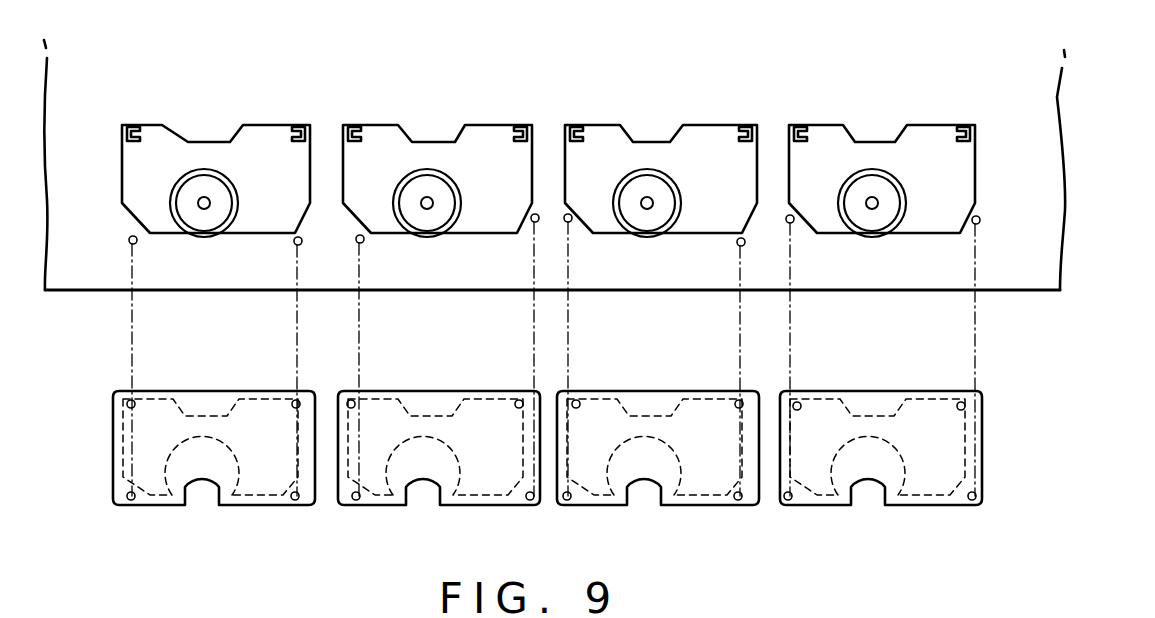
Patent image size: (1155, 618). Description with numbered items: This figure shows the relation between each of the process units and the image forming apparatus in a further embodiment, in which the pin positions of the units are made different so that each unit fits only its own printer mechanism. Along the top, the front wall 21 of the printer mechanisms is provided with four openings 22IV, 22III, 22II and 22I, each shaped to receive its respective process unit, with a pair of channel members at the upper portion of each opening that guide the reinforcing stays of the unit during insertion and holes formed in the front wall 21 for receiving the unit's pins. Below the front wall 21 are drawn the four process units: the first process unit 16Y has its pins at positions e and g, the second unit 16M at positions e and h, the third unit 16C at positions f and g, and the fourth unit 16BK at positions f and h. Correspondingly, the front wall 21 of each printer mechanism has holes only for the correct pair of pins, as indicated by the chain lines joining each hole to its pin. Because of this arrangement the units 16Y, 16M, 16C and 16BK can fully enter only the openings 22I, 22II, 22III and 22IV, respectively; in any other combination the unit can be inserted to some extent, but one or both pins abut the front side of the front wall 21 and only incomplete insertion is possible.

The front wall 21 is at (1047, 256).
The opening 22IV is at (208, 150).
The opening 22III is at (432, 152).
The opening 22II is at (654, 152).
The opening 22I is at (871, 152).
The fourth process unit 16BK is at (215, 390).
The third process unit 16C is at (442, 390).
The second process unit 16M is at (655, 390).
The first process unit 16Y is at (880, 391).